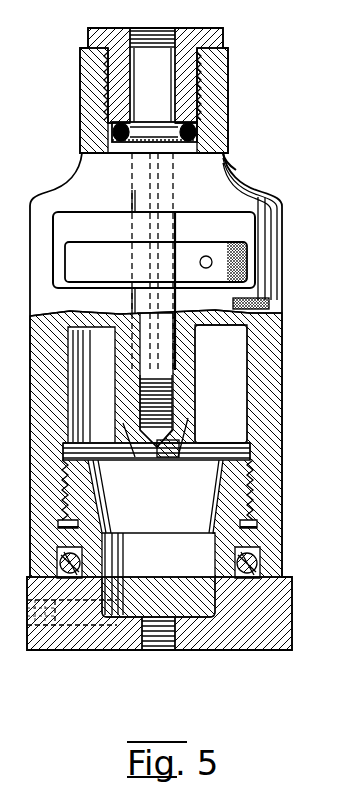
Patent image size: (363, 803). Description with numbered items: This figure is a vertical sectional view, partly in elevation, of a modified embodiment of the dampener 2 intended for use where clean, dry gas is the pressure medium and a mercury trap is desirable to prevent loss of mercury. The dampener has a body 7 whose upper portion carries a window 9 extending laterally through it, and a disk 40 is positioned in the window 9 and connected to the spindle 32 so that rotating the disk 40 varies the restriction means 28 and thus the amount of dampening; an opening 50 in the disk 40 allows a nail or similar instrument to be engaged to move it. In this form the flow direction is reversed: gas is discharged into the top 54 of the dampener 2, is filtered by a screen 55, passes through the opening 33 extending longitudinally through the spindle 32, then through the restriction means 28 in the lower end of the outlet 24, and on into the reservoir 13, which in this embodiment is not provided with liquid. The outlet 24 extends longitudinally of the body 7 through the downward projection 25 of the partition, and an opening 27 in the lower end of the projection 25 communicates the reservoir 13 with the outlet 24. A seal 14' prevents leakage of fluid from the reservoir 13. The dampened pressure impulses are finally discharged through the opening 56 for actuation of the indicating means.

The dampener 2 is at (183, 358).
The body 7 is at (159, 401).
The window 9 is at (154, 250).
The liquid reservoir 13 is at (221, 384).
The seal 14' is at (200, 560).
The outlet opening 24 is at (188, 447).
The downward projection 25 is at (123, 410).
The opening 27 is at (158, 445).
The restriction means 28 is at (185, 411).
The spindle 32 is at (178, 228).
The opening 33 is at (153, 180).
The disk 40 is at (156, 262).
The opening 50 is at (212, 262).
The top 54 is at (225, 48).
The screen 55 is at (155, 130).
The opening 56 is at (163, 650).